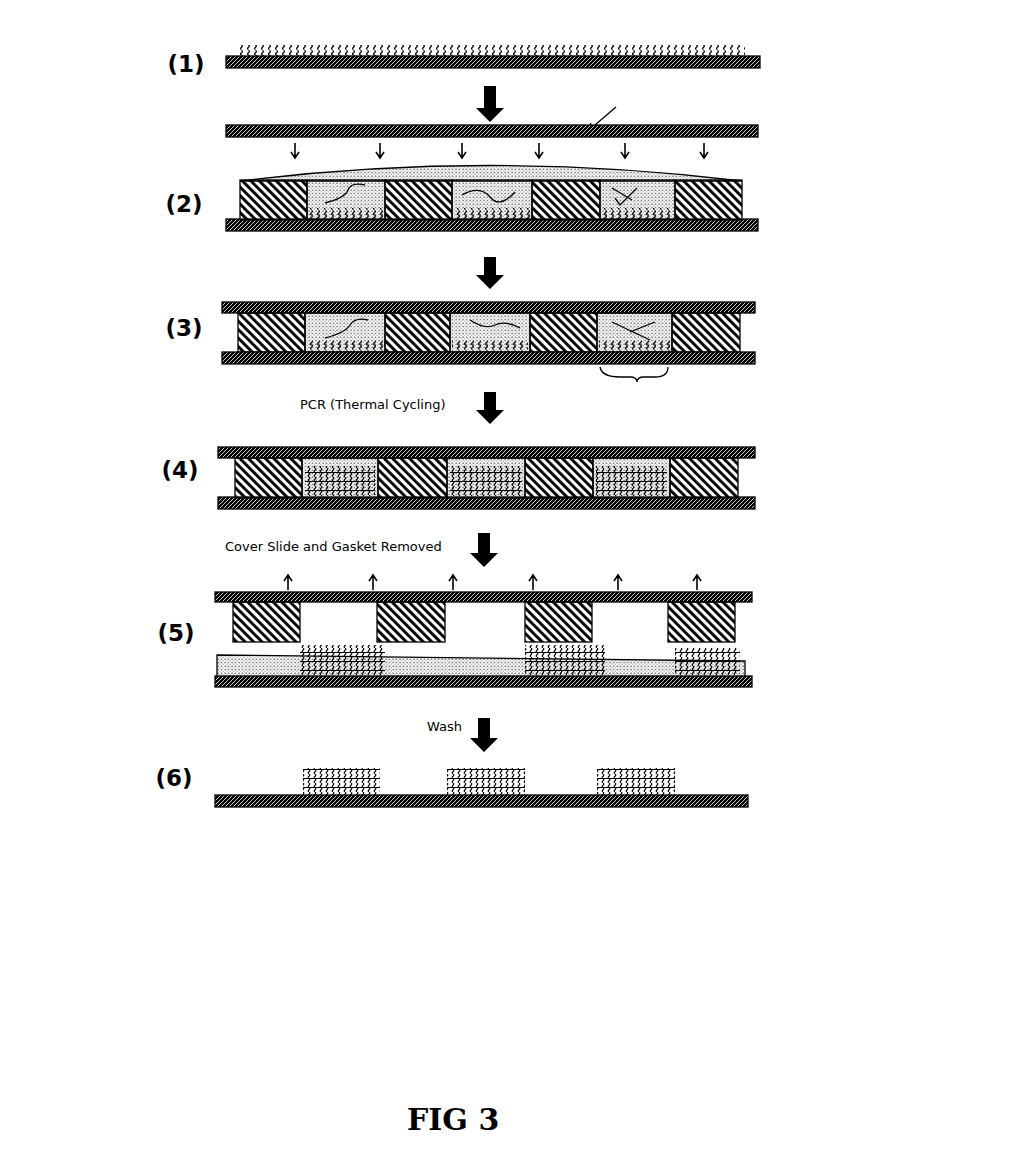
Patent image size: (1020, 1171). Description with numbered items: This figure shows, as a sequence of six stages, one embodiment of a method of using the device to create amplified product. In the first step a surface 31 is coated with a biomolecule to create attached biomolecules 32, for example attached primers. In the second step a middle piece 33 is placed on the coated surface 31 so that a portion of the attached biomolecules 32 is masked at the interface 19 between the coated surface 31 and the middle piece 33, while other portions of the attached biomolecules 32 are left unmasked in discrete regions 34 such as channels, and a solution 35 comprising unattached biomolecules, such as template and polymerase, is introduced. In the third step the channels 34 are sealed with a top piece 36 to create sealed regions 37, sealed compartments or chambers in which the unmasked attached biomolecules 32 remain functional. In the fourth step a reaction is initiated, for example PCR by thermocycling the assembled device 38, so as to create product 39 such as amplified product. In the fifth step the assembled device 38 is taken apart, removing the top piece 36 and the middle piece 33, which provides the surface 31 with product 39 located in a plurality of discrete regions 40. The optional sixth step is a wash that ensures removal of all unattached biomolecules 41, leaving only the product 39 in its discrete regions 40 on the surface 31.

The interface 19 is at (568, 350).
The surface 31 is at (766, 208).
The attached biomolecules 32 is at (367, 45).
The middle piece 33 is at (251, 179).
The discrete regions 34 is at (323, 314).
The solution 35 is at (485, 178).
The top piece 36 is at (211, 579).
The sealed regions 37 is at (634, 359).
The assembled device 38 is at (518, 334).
The product 39 is at (623, 464).
The discrete regions 40 is at (610, 773).
The unattached biomolecules 41 is at (705, 697).